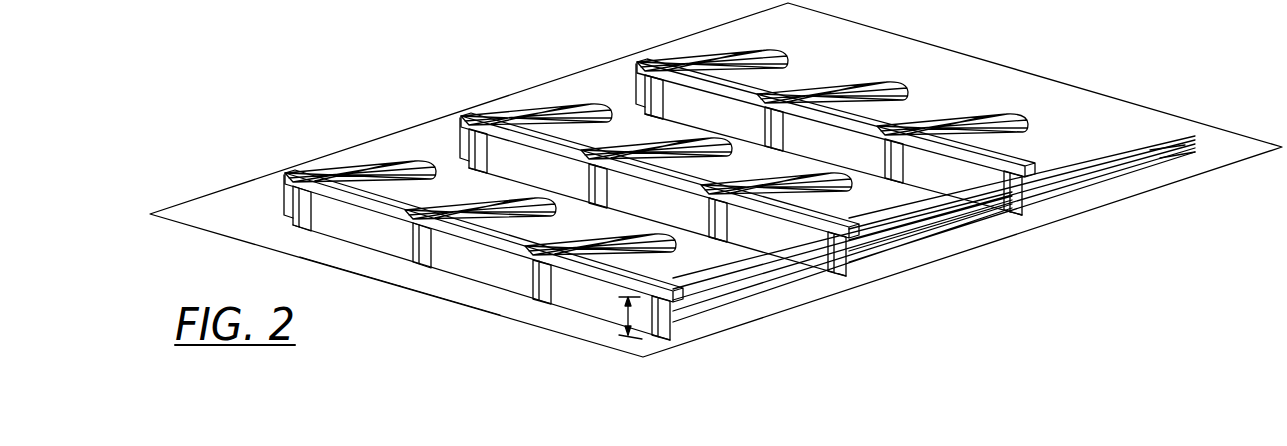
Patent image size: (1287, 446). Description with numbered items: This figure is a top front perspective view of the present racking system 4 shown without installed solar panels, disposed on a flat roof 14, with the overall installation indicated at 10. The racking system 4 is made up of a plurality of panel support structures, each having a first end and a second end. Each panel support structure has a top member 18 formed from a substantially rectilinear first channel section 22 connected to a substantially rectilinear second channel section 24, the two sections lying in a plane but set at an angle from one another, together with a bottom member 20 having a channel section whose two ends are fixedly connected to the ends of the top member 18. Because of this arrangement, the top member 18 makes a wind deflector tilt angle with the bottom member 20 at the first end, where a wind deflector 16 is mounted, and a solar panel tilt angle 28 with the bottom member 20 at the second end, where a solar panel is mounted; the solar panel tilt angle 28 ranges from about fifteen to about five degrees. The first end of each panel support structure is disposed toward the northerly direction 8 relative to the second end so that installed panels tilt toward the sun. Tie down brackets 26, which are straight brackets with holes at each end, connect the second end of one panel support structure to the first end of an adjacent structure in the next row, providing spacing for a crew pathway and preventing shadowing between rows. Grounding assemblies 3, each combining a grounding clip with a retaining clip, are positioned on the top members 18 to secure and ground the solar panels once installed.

The grounding assembly 3 is at (637, 229).
The racking system 4 is at (451, 314).
The northerly direction 8 is at (383, 304).
The dunnage system 10 is at (1043, 43).
The flat roof 14 is at (903, 48).
The wind deflector 16 is at (362, 217).
The top member 18 is at (848, 328).
The bottom member 20 is at (748, 276).
The first channel section 22 is at (688, 302).
The second channel section 24 is at (716, 284).
The tie down bracket 26 is at (827, 265).
The solar panel tilt angle 28 is at (626, 314).